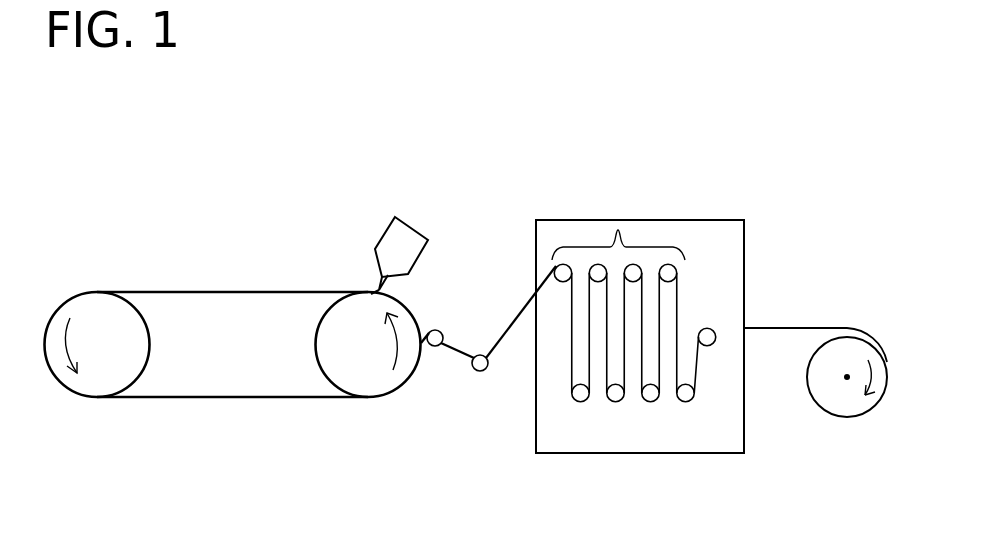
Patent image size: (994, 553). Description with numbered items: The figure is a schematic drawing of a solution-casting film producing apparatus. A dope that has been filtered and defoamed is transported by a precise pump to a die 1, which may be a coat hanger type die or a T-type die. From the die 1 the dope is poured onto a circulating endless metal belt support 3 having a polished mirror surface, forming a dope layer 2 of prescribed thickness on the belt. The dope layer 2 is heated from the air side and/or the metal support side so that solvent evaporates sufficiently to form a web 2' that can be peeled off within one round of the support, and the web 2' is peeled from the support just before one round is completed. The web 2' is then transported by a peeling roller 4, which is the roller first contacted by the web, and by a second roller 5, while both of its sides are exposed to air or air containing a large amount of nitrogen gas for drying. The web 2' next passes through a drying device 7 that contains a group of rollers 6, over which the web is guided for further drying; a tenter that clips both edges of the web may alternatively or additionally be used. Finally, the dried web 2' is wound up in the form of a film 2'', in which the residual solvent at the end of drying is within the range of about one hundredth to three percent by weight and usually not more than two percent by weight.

The die 1 is at (407, 237).
The dope layer 2 is at (211, 312).
The web 2' is at (448, 395).
The film 2'' is at (815, 331).
The endless metal belt support 3 is at (405, 305).
The peeling roller 4 is at (443, 337).
The second roller 5 is at (478, 373).
The group of rollers 6 is at (617, 223).
The drying device 7 is at (707, 220).